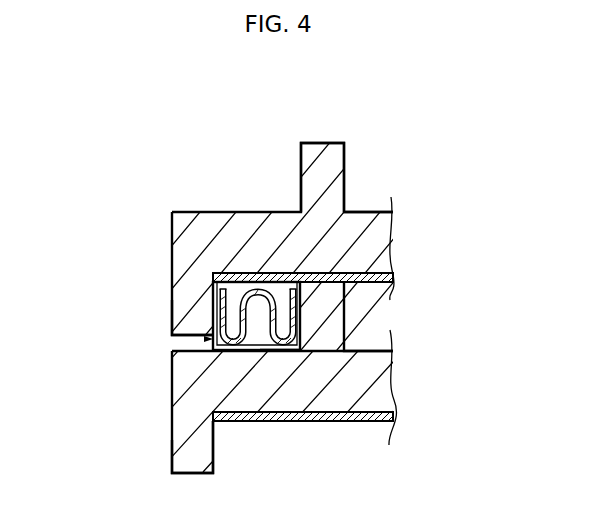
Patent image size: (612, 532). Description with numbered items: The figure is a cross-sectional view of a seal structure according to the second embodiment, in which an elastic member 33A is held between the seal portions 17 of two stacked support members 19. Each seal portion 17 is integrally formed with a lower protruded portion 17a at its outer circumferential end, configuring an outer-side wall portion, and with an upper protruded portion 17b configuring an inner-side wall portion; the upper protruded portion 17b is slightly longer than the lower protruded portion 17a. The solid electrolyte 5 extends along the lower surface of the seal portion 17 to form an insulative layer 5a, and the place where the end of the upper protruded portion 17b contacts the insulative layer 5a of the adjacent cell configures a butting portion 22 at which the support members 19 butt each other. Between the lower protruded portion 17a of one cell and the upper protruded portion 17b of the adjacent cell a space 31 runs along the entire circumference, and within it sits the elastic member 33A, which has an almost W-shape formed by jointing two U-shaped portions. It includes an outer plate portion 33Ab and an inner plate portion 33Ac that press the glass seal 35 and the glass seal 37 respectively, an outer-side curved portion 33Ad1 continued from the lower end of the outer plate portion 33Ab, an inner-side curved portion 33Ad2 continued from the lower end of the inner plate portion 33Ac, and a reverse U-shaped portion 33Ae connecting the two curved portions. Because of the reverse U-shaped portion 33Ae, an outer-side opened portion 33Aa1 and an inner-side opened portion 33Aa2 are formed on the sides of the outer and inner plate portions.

The seal portion 17 is at (172, 242).
The support member 19 is at (261, 300).
The lower protruded portion 17a is at (172, 312).
The upper protruded portion 17b is at (344, 166).
The butting portion 22 is at (340, 273).
The insulative layer 5a is at (358, 280).
The solid electrolyte 5 is at (301, 347).
The glass seal 35 is at (214, 304).
The elastic member 33A is at (206, 339).
The outer-side opened portion 33Aa1 is at (233, 297).
The inner-side opened portion 33Aa2 is at (274, 297).
The outer plate portion 33Ab is at (232, 278).
The inner plate portion 33Ac is at (289, 297).
The reverse U-shaped portion 33Ae is at (245, 297).
The outer-side curved portion 33Ad1 is at (231, 351).
The inner-side curved portion 33Ad2 is at (268, 351).
The space 31 is at (284, 313).
The glass seal 37 is at (286, 351).